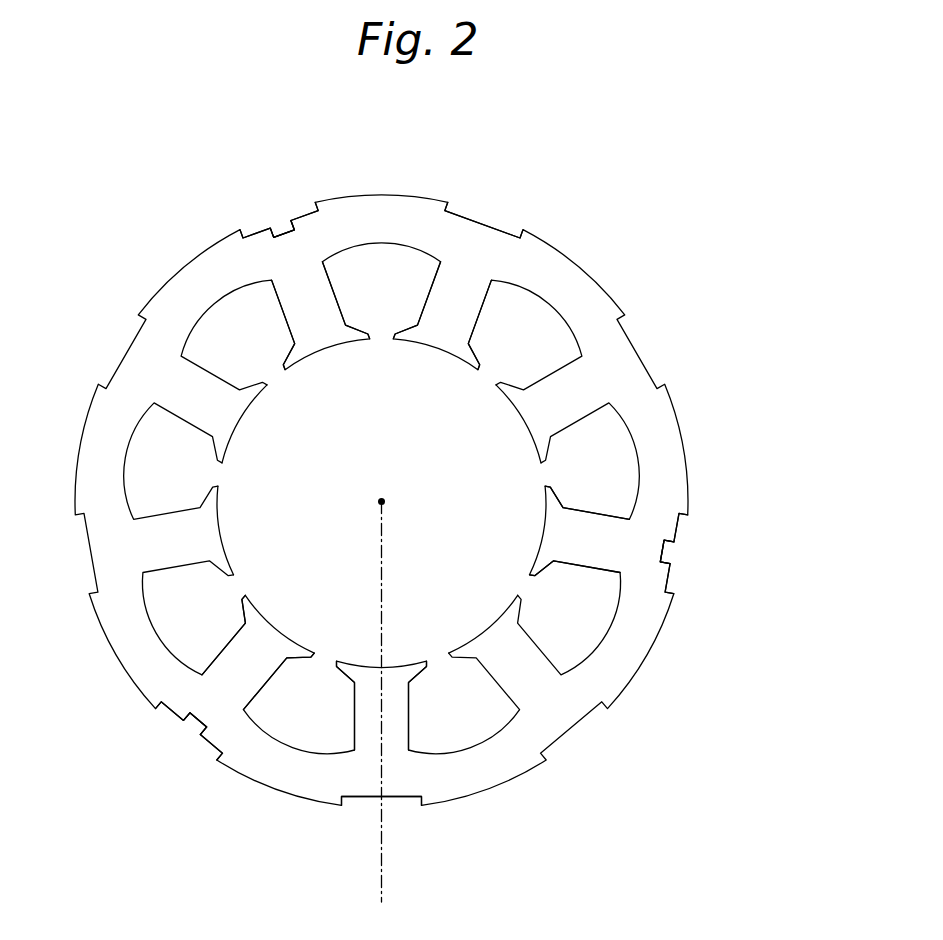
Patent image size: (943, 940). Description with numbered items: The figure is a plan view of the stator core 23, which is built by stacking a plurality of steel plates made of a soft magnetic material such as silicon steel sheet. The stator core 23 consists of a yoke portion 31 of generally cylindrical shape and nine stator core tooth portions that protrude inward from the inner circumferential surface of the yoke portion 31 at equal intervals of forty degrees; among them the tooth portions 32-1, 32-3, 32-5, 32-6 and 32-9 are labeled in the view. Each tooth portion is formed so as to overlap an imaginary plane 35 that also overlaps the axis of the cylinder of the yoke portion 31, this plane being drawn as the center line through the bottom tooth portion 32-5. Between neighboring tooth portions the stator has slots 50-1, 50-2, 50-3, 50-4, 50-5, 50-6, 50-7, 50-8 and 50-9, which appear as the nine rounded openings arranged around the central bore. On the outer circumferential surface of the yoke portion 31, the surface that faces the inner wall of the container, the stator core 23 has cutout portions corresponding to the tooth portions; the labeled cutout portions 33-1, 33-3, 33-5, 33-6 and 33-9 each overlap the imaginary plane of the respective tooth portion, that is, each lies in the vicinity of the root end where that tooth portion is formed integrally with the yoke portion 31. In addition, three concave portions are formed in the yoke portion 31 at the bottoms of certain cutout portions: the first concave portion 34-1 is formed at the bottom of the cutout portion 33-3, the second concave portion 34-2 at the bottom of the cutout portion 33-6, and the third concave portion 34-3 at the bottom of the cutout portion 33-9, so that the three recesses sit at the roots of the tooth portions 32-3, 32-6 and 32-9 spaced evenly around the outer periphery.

The stator core 23 is at (639, 132).
The yoke portion 31 is at (580, 262).
The stator core tooth portion 32-1 is at (426, 297).
The stator core tooth portion 32-3 is at (594, 513).
The stator core tooth portion 32-5 is at (408, 719).
The stator core tooth portion 32-6 is at (218, 656).
The stator core tooth portion 32-9 is at (338, 297).
The cutout portion 33-1 is at (473, 222).
The cutout portion 33-3 is at (671, 587).
The cutout portion 33-5 is at (353, 803).
The cutout portion 33-6 is at (210, 752).
The cutout portion 33-9 is at (306, 213).
The first concave portion 34-1 is at (671, 552).
The second concave portion 34-2 is at (190, 724).
The third concave portion 34-3 is at (277, 226).
The imaginary plane 35 is at (378, 893).
The slot 50-1 is at (505, 360).
The slot 50-2 is at (573, 475).
The slot 50-3 is at (535, 603).
The slot 50-4 is at (418, 660).
The slot 50-5 is at (347, 660).
The slot 50-6 is at (232, 590).
The slot 50-7 is at (195, 475).
The slot 50-8 is at (258, 355).
The slot 50-9 is at (382, 312).